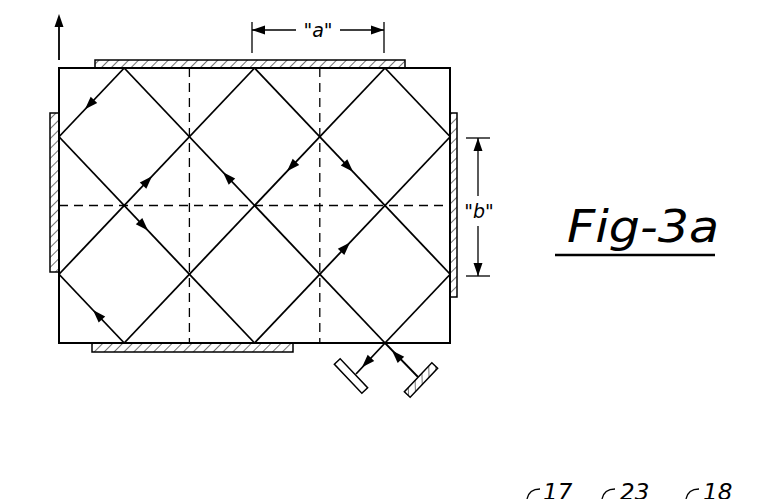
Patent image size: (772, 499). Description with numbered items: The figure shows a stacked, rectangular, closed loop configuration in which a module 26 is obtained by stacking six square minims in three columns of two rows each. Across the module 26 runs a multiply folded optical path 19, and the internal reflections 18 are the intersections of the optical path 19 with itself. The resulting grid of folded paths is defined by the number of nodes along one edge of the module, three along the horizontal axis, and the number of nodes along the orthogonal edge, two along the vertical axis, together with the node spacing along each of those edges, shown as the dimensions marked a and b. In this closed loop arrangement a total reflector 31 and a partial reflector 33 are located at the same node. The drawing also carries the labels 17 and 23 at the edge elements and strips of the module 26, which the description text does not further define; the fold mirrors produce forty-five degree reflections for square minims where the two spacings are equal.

The reflection point 17 is at (124, 68).
The internal reflection 18 is at (410, 115).
The optical path 19 is at (428, 304).
The reflective coating strip 23 is at (188, 60).
The module 26 is at (78, 75).
The total reflector 31 is at (432, 378).
The partial reflector 33 is at (363, 392).